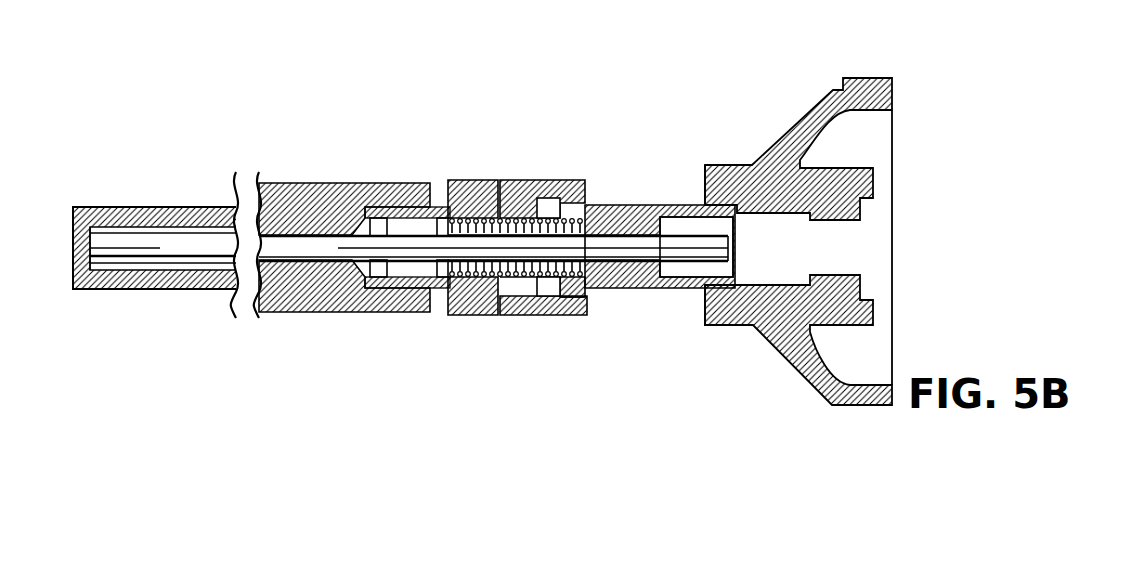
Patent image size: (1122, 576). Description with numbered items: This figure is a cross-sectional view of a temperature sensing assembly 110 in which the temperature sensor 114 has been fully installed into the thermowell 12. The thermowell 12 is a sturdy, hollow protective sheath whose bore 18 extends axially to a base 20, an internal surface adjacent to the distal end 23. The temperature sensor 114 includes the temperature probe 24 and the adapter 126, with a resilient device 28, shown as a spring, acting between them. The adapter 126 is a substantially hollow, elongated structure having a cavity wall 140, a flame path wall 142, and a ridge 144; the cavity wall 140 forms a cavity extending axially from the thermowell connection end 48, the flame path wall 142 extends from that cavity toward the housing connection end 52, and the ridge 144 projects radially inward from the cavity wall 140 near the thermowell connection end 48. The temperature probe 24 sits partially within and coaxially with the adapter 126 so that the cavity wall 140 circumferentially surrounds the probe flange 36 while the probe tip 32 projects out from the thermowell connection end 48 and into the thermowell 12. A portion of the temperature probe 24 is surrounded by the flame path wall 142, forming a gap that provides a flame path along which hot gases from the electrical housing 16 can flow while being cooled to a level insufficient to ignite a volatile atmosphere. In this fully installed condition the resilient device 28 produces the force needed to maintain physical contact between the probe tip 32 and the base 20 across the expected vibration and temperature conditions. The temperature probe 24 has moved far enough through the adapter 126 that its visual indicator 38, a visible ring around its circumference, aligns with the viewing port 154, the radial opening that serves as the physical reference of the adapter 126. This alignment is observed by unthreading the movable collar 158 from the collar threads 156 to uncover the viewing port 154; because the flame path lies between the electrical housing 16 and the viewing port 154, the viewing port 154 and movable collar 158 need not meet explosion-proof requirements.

The connector assembly 110 is at (206, 78).
The thermowell 12 is at (382, 239).
The base 20 is at (103, 228).
The bore 18 is at (122, 272).
The distal end 23 is at (73, 265).
The probe tip 32 is at (80, 258).
The ridge 144 is at (373, 210).
The cavity wall 140 is at (413, 245).
The temperature sensor 114 is at (473, 240).
The adapter 126 is at (582, 250).
The viewing port 154 is at (546, 206).
The housing connection end 52 is at (742, 222).
The electrical housing 16 is at (808, 112).
The thermowell connection end 48 is at (350, 300).
The probe flange 36 is at (437, 282).
The resilient device 28 is at (470, 300).
The visual indicator 38 is at (516, 288).
The collar threads 156 is at (530, 310).
The movable collar 158 is at (547, 310).
The flame path wall 142 is at (660, 289).
The temperature probe 24 is at (679, 265).